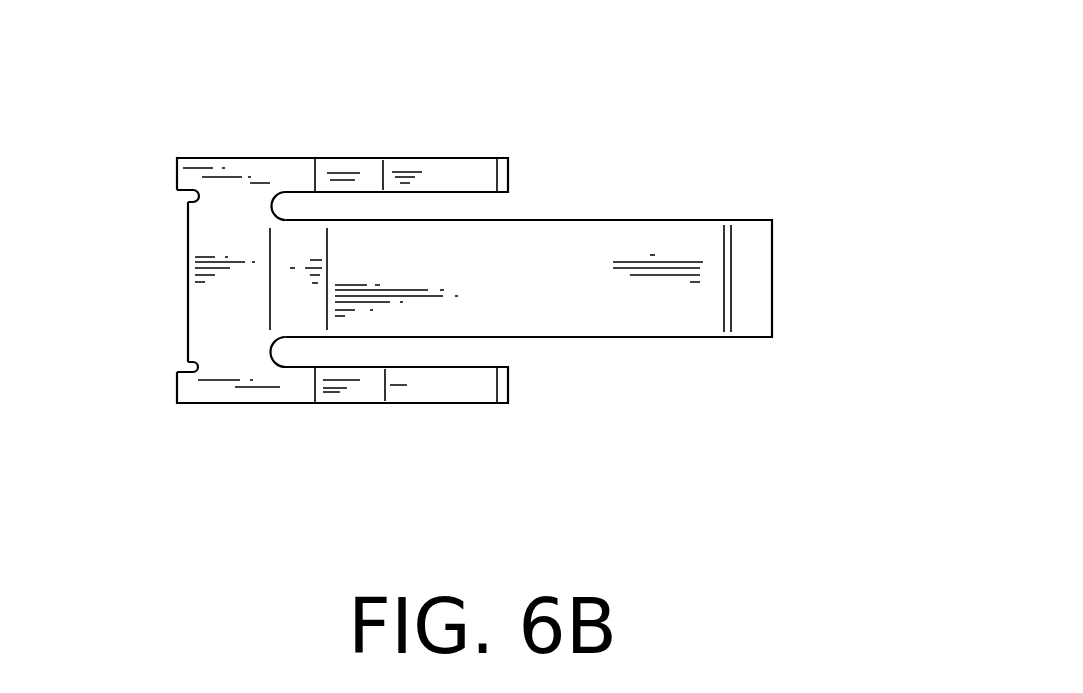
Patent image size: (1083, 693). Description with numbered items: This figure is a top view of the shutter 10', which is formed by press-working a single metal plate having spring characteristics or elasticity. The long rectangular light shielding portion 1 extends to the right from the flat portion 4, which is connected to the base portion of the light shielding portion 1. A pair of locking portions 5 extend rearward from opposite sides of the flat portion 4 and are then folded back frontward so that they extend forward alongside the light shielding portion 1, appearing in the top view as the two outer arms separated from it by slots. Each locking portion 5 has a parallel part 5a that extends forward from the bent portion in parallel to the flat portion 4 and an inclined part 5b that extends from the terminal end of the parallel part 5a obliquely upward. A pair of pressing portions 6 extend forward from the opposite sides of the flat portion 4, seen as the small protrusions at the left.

The light shielding portion 1 is at (653, 240).
The flat portion 4 is at (192, 288).
The locking portions 5 is at (457, 173).
The parallel part 5a is at (303, 392).
The inclined part 5b is at (403, 388).
The pressing portions 6 is at (187, 185).
The shutter 10' is at (892, 276).